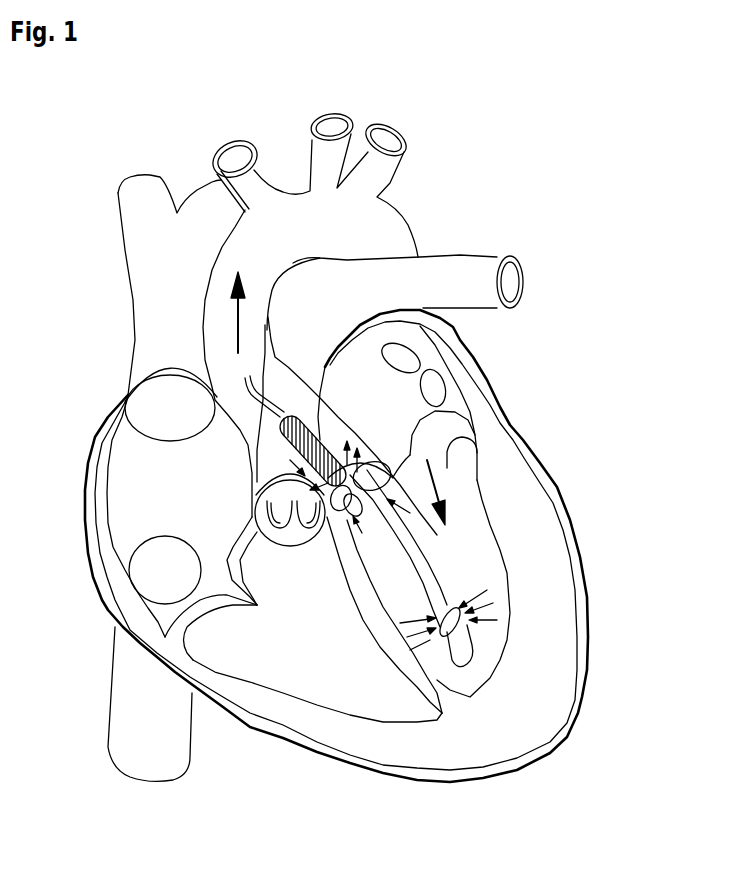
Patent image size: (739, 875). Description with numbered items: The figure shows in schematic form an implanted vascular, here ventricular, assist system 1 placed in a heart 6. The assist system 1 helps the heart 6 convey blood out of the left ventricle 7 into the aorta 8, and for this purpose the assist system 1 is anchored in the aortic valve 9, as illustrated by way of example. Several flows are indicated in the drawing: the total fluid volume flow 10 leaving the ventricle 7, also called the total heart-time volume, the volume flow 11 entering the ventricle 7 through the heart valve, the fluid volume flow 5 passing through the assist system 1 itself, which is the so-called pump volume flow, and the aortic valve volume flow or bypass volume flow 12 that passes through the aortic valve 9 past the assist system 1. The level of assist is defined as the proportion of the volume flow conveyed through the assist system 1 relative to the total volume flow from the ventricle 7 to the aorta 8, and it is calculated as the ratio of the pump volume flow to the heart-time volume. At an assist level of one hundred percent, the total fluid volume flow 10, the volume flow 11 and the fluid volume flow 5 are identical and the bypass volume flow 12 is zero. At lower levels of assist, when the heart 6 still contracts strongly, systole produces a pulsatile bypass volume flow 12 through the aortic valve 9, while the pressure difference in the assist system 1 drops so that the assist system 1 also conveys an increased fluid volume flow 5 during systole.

The vascular assist system 1 is at (532, 636).
The fluid volume flow through the assist system 5 is at (336, 545).
The heart 6 is at (305, 752).
The ventricle 7 is at (524, 588).
The aorta 8 is at (340, 184).
The aortic valve 9 is at (457, 377).
The total fluid volume flow 10 is at (168, 344).
The volume flow from the heart valve into the ventricle 11 is at (520, 481).
The bypass volume flow 12 is at (438, 390).